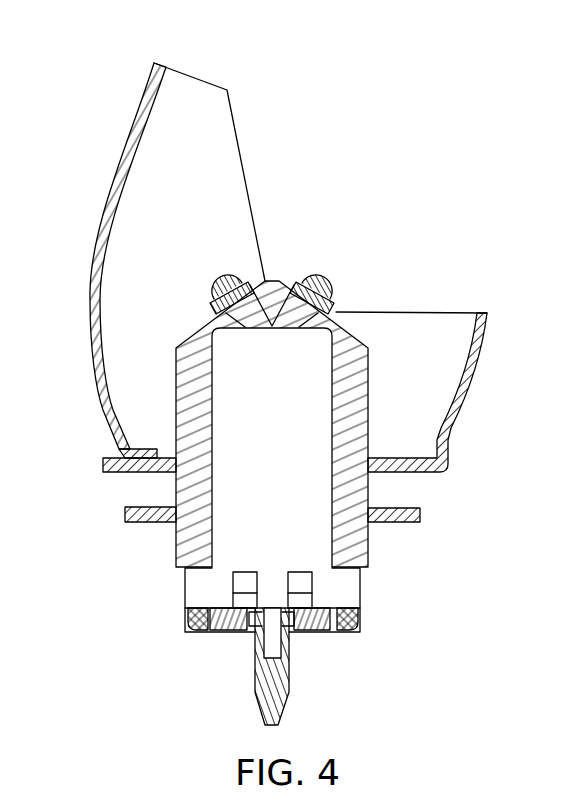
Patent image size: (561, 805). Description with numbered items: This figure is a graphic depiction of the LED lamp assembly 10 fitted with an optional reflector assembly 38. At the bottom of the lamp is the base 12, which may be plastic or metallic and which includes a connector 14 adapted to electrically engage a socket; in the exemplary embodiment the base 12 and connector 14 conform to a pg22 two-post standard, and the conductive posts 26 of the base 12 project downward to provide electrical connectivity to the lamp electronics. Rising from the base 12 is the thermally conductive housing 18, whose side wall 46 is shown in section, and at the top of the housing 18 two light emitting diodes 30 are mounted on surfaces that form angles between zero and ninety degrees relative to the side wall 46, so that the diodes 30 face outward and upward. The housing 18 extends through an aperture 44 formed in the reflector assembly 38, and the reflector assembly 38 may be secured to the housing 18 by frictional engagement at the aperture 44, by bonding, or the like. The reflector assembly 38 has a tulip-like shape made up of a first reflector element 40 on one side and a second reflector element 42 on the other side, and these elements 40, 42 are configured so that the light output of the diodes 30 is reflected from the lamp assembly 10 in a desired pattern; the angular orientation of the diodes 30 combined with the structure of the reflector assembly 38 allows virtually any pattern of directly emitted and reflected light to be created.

The LED lamp assembly 10 is at (382, 183).
The base 12 is at (362, 595).
The connector 14 is at (236, 669).
The thermally conductive housing 18 is at (370, 483).
The posts 26 is at (291, 682).
The light emitting diodes 30 is at (315, 281).
The reflector assembly 38 is at (190, 74).
The first reflector element 40 is at (115, 287).
The second reflector element 42 is at (448, 376).
The aperture 44 is at (167, 457).
The side wall 46 is at (176, 540).